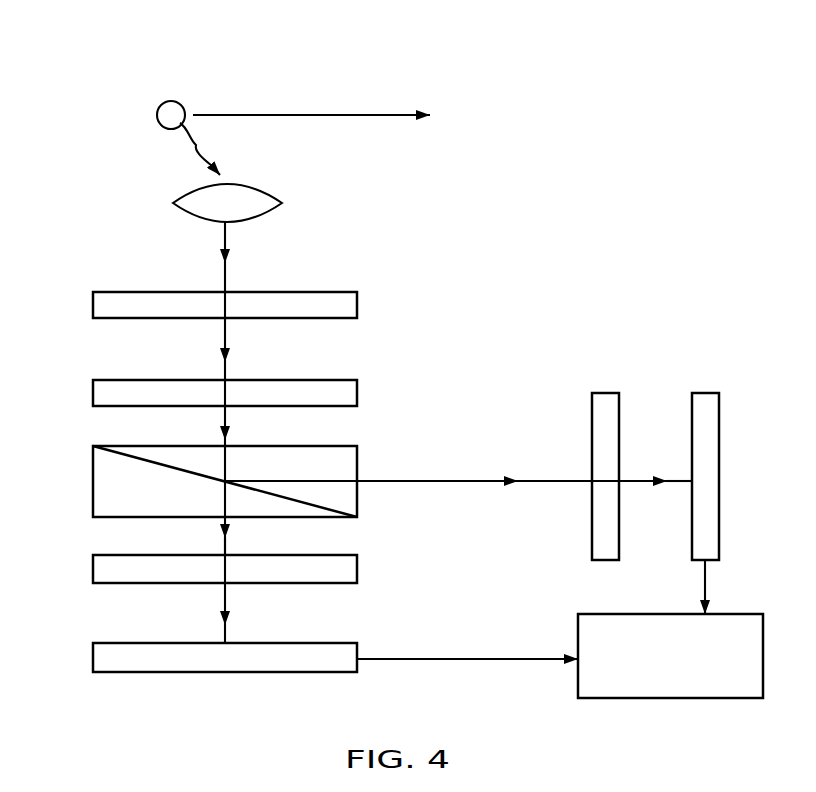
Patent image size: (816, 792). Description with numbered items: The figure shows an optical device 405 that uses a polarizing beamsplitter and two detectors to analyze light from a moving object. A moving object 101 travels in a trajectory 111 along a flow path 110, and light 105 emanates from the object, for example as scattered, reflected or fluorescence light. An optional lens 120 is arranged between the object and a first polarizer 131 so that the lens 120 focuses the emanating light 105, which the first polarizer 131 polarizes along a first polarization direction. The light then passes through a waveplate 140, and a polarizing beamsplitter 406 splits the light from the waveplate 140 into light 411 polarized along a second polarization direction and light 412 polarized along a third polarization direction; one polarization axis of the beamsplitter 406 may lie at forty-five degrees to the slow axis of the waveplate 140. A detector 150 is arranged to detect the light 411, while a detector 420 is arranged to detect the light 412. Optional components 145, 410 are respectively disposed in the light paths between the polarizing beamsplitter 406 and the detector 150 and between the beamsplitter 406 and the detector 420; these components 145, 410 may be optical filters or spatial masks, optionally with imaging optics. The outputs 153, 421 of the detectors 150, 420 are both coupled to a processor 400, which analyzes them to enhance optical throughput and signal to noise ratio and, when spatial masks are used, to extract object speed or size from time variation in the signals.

The moving object 101 is at (157, 115).
The emanating light 105 is at (198, 143).
The flow path 110 is at (307, 87).
The trajectory 111 is at (352, 117).
The lens 120 is at (173, 203).
The first polarizer 131 is at (93, 302).
The waveplate 140 is at (93, 394).
The optional component 145 is at (93, 567).
The detector 150 is at (93, 658).
The detector output 153 is at (454, 657).
The processor 400 is at (644, 613).
The optical device 405 is at (497, 260).
The polarizing beamsplitter 406 is at (93, 480).
The optional component 410 is at (598, 393).
The light polarized along second polarization direction 411 is at (226, 548).
The light polarized along third polarization direction 412 is at (393, 480).
The detector 420 is at (705, 393).
The detector output 421 is at (708, 582).